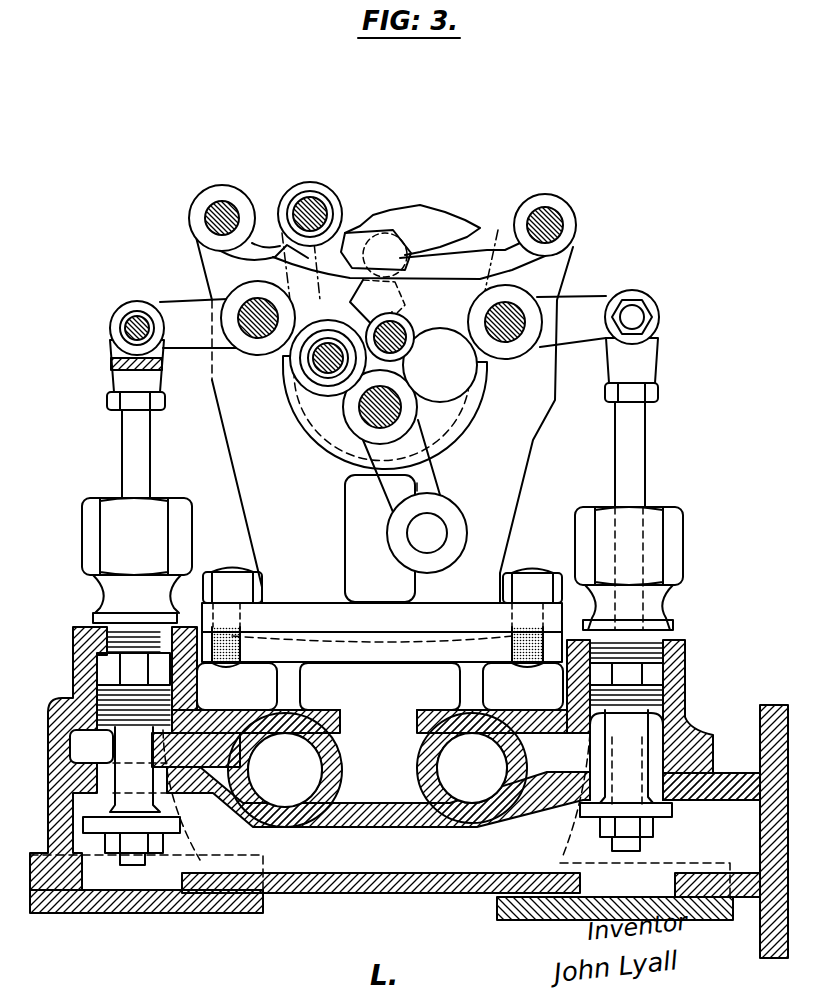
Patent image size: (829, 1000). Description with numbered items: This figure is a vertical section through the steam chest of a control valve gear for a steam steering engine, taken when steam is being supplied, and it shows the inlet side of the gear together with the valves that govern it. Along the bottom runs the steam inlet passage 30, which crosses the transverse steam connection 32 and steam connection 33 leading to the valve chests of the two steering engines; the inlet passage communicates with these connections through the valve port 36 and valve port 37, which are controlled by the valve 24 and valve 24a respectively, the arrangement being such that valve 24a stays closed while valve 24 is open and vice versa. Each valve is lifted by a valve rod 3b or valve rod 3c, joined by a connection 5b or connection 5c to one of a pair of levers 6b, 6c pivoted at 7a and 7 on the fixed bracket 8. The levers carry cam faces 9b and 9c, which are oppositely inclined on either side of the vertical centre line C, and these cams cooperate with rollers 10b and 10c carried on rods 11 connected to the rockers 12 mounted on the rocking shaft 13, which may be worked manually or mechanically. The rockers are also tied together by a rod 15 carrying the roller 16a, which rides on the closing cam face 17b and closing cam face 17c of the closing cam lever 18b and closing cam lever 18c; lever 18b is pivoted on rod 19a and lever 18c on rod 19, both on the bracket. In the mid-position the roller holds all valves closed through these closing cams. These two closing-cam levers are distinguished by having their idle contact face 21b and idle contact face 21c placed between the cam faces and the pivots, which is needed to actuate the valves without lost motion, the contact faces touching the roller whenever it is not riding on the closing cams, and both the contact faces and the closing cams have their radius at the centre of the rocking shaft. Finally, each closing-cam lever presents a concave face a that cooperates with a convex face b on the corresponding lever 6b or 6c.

The valve rod 3b is at (132, 456).
The valve rod 3c is at (634, 460).
The connection 5b is at (122, 327).
The connection 5c is at (636, 317).
The lever 6b is at (180, 313).
The lever 6c is at (568, 298).
The pivot 7 is at (585, 292).
The pivot 7a is at (208, 274).
The fixed bracket 8 is at (278, 523).
The cam face 9b is at (398, 295).
The cam face 9c is at (356, 312).
The roller 10b is at (410, 336).
The roller 10c is at (312, 364).
The rod 11 is at (407, 343).
The rocker 12 is at (408, 450).
The rocking shaft 13 is at (385, 408).
The rod 15 is at (313, 217).
The roller 16a is at (311, 208).
The closing cam face 17b is at (432, 208).
The closing cam face 17c is at (280, 248).
The closing cam lever 18b is at (453, 228).
The closing cam lever 18c is at (385, 238).
The pivot rod 19 is at (551, 222).
The pivot rod 19a is at (221, 212).
The idle contact face 21b is at (360, 233).
The idle contact face 21c is at (441, 253).
The valve 24 is at (175, 823).
The valve 24a is at (658, 812).
The steam inlet passage 30 is at (726, 838).
The steam connection 32 is at (285, 770).
The steam connection 33 is at (472, 768).
The valve port 36 is at (104, 778).
The valve port 37 is at (652, 783).
The concave face a is at (395, 268).
The convex face b is at (378, 283).
The vertical centre line C is at (400, 135).